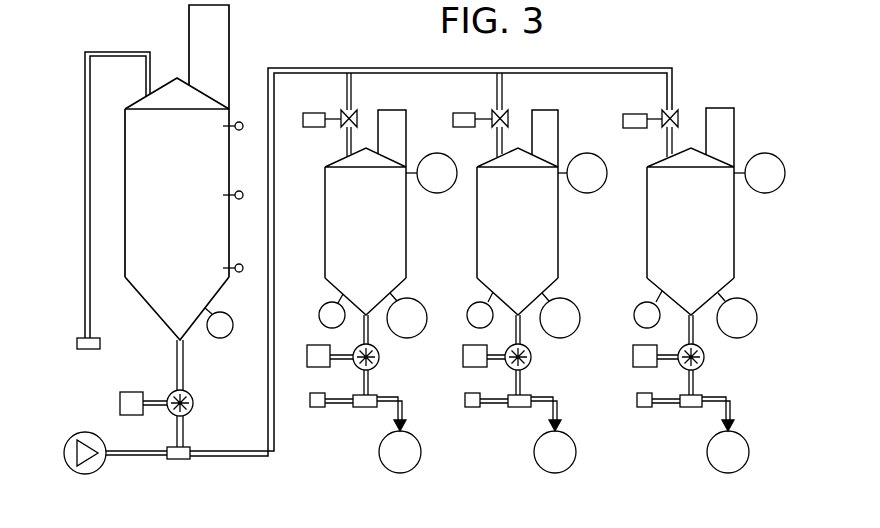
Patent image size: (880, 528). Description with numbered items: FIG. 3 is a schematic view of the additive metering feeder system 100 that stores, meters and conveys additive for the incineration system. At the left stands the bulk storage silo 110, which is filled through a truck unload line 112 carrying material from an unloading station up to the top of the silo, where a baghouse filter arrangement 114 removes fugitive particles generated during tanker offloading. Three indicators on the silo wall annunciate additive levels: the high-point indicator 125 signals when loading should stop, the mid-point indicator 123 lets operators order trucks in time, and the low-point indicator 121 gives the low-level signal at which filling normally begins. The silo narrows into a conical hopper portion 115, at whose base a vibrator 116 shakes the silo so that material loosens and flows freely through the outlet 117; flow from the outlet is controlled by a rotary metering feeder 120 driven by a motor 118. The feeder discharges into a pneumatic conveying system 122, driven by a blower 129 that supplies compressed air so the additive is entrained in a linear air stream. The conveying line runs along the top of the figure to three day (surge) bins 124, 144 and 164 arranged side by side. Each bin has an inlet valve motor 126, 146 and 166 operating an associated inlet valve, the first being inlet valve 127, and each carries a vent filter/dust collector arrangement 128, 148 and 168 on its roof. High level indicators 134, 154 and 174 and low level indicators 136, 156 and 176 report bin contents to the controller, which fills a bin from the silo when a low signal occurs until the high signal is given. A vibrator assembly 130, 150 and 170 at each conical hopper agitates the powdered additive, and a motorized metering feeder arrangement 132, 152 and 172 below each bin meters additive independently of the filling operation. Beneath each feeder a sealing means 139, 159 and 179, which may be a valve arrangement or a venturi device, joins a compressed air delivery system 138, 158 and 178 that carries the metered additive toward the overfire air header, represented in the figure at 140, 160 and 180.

The additive metering feeder system 100 is at (77, 256).
The bulk storage silo 110 is at (133, 151).
The truck unload line 112 is at (85, 65).
The baghouse filter arrangement 114 is at (220, 40).
The conical hopper portion 115 is at (147, 290).
The vibrator 116 is at (225, 338).
The outlet 117 is at (173, 339).
The motor 118 is at (120, 400).
The rotary metering feeder 120 is at (193, 395).
The low-point indicator 121 is at (240, 264).
The pneumatic conveying system 122 is at (233, 457).
The mid-point indicator 123 is at (240, 191).
The first day (surge) bin 124 is at (397, 220).
The high-point indicator 125 is at (240, 122).
The inlet valve motor 126 is at (313, 113).
The inlet valve 127 is at (358, 117).
The vent filter/dust collector arrangement 128 is at (398, 125).
The blower 129 is at (65, 464).
The vibrator assembly 130 is at (322, 303).
The motorized metering feeder arrangement 132 is at (386, 353).
The high day (surge) bin level indicator 134 is at (449, 158).
The low day (surge) bin level indicator 136 is at (413, 298).
The compressed air delivery system 138 is at (310, 398).
The sealing means 139 is at (366, 407).
The overfire air port 140 is at (379, 452).
The second day (surge) bin 144 is at (558, 220).
The inlet valve motor 146 is at (466, 113).
The vent filter/dust collector arrangement 148 is at (549, 119).
The vibrator assembly 150 is at (470, 325).
The motorized metering feeder arrangement 152 is at (538, 353).
The high day (surge) bin level indicator 154 is at (600, 157).
The low day (surge) bin level indicator 156 is at (573, 298).
The compressed air delivery system 158 is at (465, 398).
The sealing means 159 is at (519, 407).
The overfire air port 160 is at (534, 452).
The third day (surge) bin 164 is at (728, 220).
The inlet valve motor 166 is at (632, 114).
The vent filter/dust collector arrangement 168 is at (725, 113).
The vibrator assembly 170 is at (637, 324).
The motorized metering feeder arrangement 172 is at (710, 353).
The high day (surge) bin level indicator 174 is at (767, 152).
The low day (surge) bin level indicator 176 is at (743, 298).
The compressed air delivery system 178 is at (637, 398).
The sealing means 179 is at (692, 407).
The overfire air port 180 is at (707, 452).